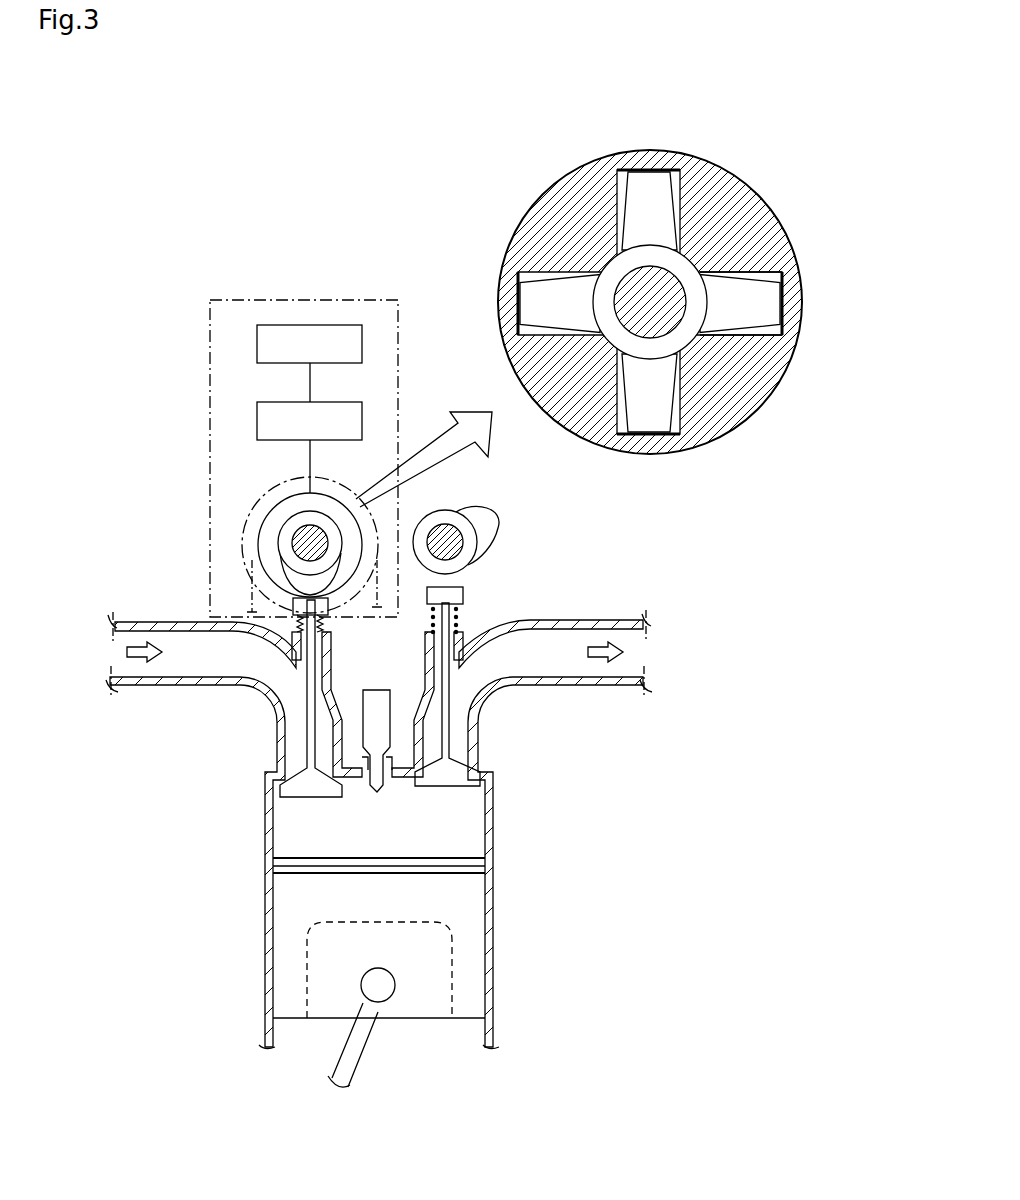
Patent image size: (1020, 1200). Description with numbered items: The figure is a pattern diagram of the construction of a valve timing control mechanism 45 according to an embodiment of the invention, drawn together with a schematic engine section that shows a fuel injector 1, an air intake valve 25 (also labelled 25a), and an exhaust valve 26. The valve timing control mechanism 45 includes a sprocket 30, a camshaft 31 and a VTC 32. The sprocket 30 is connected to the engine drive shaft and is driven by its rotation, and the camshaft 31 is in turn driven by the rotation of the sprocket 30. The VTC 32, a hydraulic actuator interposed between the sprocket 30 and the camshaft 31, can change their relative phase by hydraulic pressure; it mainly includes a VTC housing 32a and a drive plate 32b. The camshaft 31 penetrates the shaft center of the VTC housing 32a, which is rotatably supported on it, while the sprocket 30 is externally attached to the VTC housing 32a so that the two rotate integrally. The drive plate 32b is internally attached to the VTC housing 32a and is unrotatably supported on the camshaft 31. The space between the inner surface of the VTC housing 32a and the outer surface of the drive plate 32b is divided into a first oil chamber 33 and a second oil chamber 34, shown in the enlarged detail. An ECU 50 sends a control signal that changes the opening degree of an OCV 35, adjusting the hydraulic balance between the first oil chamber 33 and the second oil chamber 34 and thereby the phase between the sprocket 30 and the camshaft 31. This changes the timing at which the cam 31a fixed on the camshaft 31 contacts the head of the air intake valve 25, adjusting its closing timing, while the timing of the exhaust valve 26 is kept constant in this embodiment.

The fuel injection valve 1 is at (376, 690).
The air intake valve 25 is at (313, 797).
The intake valve 25a is at (293, 605).
The exhaust valve 26 is at (446, 788).
The sprocket 30 is at (252, 506).
The camshaft 31 is at (293, 566).
The cam 31a is at (333, 580).
The VTC (Valve Timing Controller) 32 is at (257, 553).
The VTC housing 32a is at (803, 304).
The drive plate 32b is at (775, 329).
The first oil chamber 33 is at (623, 182).
The second oil chamber 34 is at (675, 182).
The OCV (Oil Control Valve) 35 is at (257, 425).
The valve timing control mechanism 45 is at (308, 300).
The ECU 50 is at (257, 350).